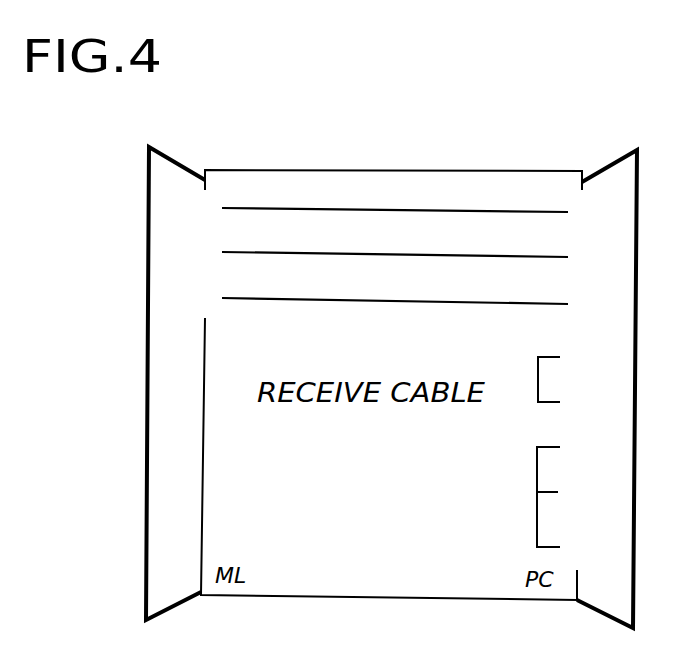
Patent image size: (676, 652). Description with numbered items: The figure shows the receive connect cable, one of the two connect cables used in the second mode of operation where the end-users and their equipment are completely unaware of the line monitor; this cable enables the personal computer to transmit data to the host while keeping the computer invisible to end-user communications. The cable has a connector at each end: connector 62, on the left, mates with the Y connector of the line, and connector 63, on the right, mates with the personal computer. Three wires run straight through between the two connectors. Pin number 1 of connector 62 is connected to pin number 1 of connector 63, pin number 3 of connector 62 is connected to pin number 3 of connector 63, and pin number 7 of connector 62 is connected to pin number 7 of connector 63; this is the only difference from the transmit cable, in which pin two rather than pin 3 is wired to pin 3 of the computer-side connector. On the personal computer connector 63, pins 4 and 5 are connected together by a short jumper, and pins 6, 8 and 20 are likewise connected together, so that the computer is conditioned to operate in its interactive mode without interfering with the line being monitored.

The connector 62 is at (163, 150).
The connector 63 is at (625, 150).
The pin number 1 is at (392, 211).
The pin number 3 is at (390, 258).
The pin number 7 is at (390, 305).
The pin 4 is at (562, 361).
The pin 5 is at (562, 396).
The pin 6 is at (561, 455).
The pin 8 is at (561, 495).
The pin 20 is at (567, 541).